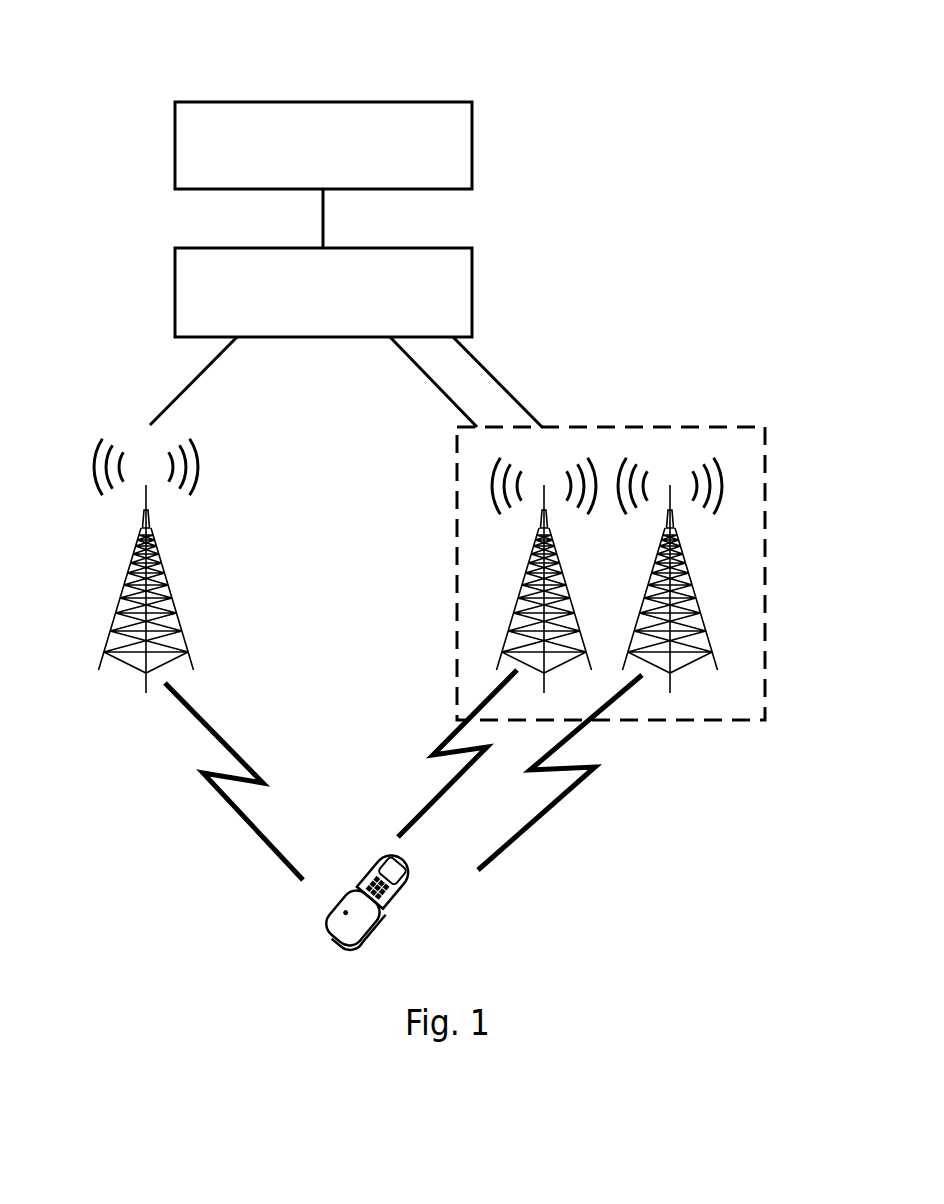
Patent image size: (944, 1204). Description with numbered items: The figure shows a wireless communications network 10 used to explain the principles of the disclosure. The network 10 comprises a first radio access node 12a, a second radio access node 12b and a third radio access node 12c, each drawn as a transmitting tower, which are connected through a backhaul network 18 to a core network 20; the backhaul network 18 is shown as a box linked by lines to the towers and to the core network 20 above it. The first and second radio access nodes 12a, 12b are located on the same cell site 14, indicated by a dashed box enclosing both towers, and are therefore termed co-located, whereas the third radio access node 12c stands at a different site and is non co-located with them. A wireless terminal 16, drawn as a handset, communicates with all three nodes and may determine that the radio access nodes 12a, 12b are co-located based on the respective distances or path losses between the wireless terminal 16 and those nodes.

The network 10 is at (74, 56).
The first radio access node 12a is at (512, 632).
The second radio access node 12b is at (705, 630).
The third radio access node 12c is at (117, 587).
The cell site 14 is at (457, 495).
The wireless terminal 16 is at (313, 914).
The backhaul network 18 is at (472, 290).
The core network 20 is at (472, 145).